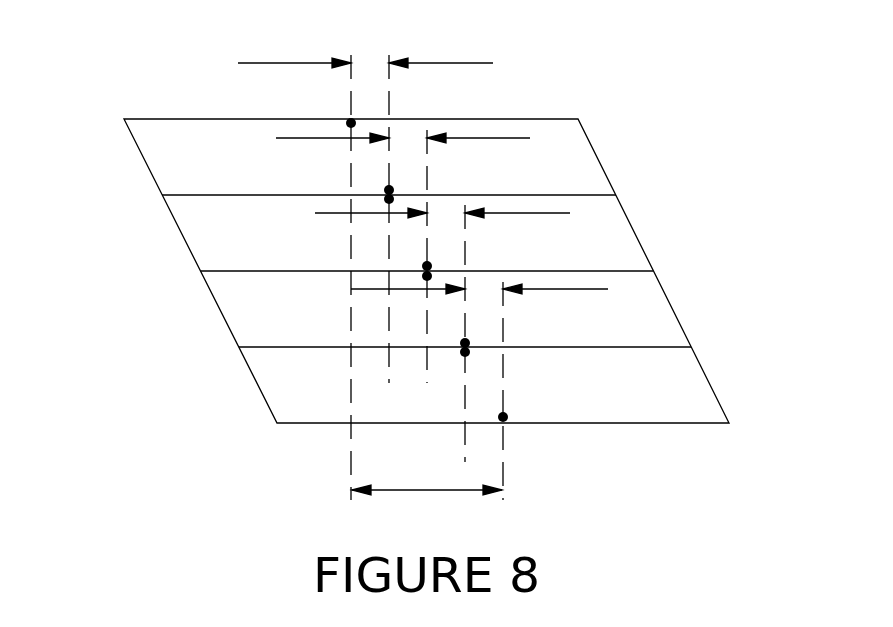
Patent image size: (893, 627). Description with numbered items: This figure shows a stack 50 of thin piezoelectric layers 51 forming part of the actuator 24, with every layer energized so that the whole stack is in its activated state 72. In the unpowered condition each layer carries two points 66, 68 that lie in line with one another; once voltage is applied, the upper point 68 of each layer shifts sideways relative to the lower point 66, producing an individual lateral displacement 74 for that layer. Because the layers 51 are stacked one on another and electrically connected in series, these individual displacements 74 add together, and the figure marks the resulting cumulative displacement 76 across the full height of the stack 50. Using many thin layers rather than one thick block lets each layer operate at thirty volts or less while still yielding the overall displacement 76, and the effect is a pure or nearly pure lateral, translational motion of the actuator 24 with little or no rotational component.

The actuator 24 is at (449, 271).
The stack 50 is at (712, 298).
The piezoelectric layer 51 is at (381, 280).
The activated state 72 is at (280, 395).
The aligned point 66 is at (386, 188).
The upper point 68 is at (350, 120).
The lateral displacement 74 is at (310, 63).
The cumulative displacement 76 is at (445, 488).